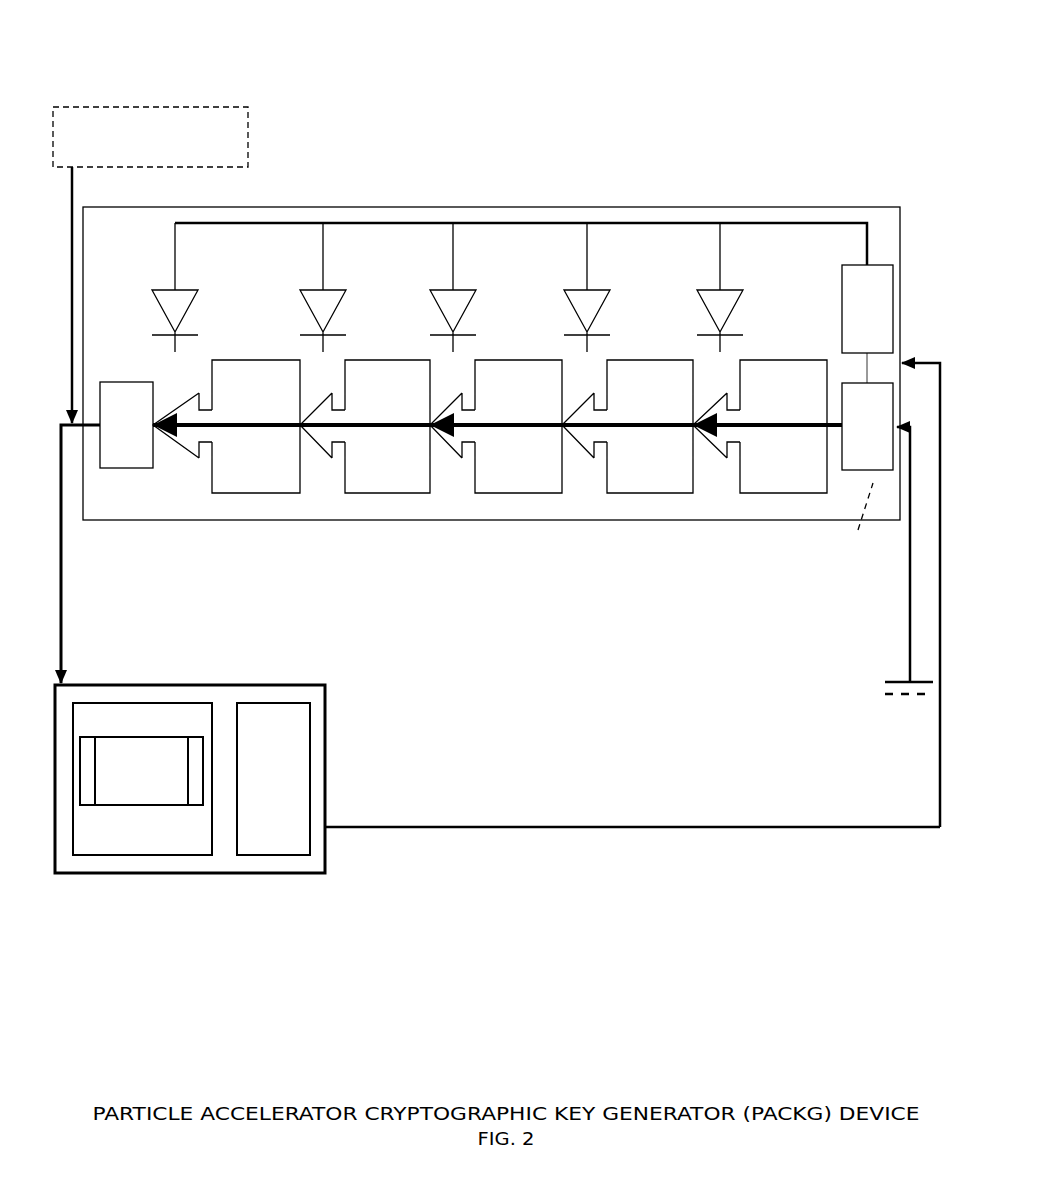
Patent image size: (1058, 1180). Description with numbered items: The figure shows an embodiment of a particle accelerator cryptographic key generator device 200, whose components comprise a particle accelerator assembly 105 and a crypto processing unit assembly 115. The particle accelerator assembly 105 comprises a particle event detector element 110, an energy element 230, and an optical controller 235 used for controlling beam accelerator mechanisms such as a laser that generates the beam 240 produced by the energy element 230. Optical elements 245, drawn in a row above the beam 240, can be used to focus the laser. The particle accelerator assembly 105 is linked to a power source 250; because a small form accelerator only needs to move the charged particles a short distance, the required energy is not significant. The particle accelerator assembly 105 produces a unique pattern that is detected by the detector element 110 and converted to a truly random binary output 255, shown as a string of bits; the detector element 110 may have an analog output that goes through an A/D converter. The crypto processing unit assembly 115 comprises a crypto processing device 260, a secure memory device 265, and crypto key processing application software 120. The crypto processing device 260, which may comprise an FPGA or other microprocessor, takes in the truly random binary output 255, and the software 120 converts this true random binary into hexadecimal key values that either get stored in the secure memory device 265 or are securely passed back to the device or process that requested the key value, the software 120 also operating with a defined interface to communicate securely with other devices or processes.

The particle accelerator cryptographic key generator device 200 is at (80, 50).
The particle accelerator assembly 105 is at (703, 205).
The particle event detector element 110 is at (136, 472).
The crypto processing unit assembly 115 is at (98, 877).
The crypto key processing application software 120 is at (143, 808).
The energy element 230 is at (847, 472).
The optical controller 235 is at (883, 263).
The beam 240 is at (385, 433).
The optical elements 245 is at (183, 287).
The power source 250 is at (878, 702).
The truly random binary output 255 is at (150, 265).
The crypto processing device 260 is at (204, 858).
The secure memory device 265 is at (314, 762).